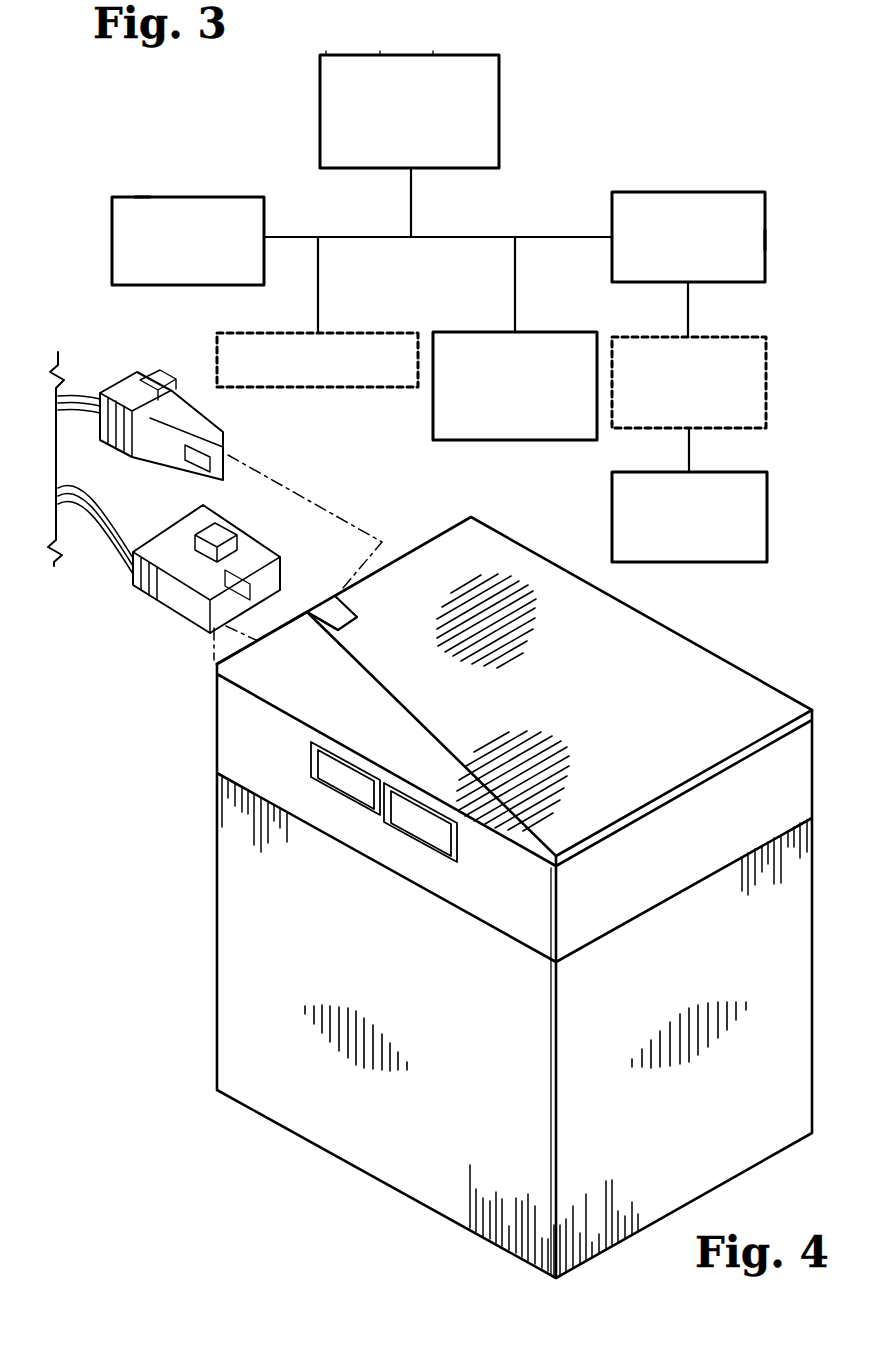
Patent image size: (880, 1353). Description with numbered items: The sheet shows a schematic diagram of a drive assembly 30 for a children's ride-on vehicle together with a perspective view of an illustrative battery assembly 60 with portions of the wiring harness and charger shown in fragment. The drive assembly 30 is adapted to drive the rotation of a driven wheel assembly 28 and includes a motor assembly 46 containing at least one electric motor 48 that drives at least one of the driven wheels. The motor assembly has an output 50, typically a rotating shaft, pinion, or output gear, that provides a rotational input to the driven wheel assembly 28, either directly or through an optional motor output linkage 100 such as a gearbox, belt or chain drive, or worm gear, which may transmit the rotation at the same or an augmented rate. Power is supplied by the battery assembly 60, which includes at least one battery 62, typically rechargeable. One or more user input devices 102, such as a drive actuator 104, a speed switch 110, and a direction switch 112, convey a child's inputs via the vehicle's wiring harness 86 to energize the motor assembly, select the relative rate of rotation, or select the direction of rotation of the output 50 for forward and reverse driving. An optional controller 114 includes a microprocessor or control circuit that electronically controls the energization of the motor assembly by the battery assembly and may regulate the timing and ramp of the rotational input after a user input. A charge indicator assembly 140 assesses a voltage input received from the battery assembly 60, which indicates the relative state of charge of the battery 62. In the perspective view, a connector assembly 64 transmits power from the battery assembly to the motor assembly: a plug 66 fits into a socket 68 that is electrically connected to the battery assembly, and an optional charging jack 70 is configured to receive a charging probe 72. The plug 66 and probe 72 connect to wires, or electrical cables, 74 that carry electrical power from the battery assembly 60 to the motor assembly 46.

In FIG. 3, the driven wheel assembly 28 is at (716, 472).
In FIG. 3, the drive assembly 30 is at (688, 111).
In FIG. 3, the motor assembly 46 is at (710, 195).
In FIG. 3, the electric motor 48 is at (766, 245).
In FIG. 3, the output 50 is at (688, 325).
In FIG. 3, the battery assembly 60 is at (210, 196).
In FIG. 4, the battery assembly 60 is at (217, 985).
In FIG. 3, the battery 62 is at (140, 197).
In FIG. 4, the connector assembly 64 is at (122, 681).
In FIG. 4, the plug 66 is at (161, 608).
In FIG. 4, the socket 68 is at (326, 591).
In FIG. 4, the charging jack 70 is at (313, 603).
In FIG. 4, the charging probe 72 is at (168, 362).
In FIG. 4, the wires 74 is at (71, 405).
In FIG. 3, the wiring harness 86 is at (525, 237).
In FIG. 3, the motor output linkage 100 is at (712, 337).
In FIG. 3, the user input devices 102 is at (468, 53).
In FIG. 3, the drive actuator 104 is at (326, 55).
In FIG. 3, the speed switch 110 is at (380, 55).
In FIG. 3, the direction switch 112 is at (433, 55).
In FIG. 3, the controller 114 is at (365, 333).
In FIG. 3, the charge indicator assembly 140 is at (534, 332).